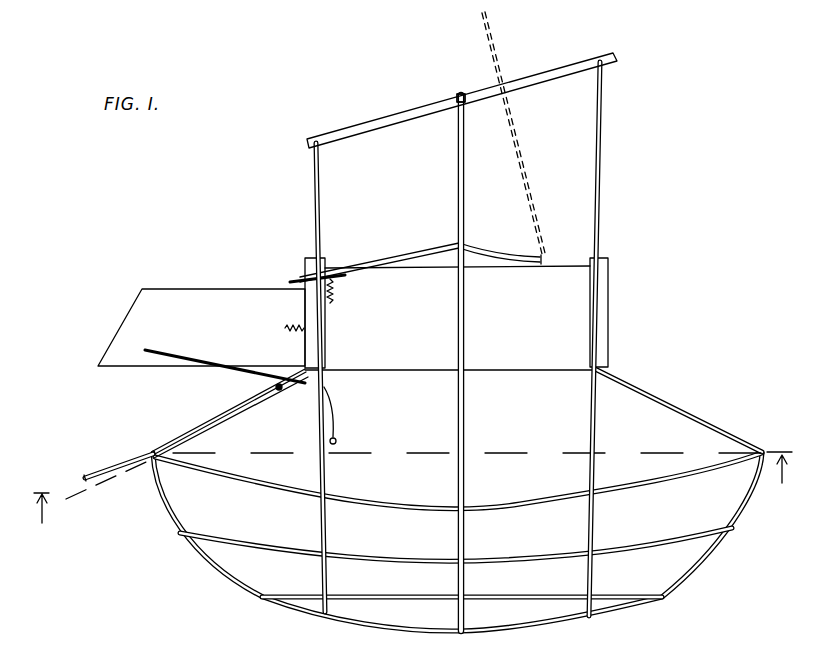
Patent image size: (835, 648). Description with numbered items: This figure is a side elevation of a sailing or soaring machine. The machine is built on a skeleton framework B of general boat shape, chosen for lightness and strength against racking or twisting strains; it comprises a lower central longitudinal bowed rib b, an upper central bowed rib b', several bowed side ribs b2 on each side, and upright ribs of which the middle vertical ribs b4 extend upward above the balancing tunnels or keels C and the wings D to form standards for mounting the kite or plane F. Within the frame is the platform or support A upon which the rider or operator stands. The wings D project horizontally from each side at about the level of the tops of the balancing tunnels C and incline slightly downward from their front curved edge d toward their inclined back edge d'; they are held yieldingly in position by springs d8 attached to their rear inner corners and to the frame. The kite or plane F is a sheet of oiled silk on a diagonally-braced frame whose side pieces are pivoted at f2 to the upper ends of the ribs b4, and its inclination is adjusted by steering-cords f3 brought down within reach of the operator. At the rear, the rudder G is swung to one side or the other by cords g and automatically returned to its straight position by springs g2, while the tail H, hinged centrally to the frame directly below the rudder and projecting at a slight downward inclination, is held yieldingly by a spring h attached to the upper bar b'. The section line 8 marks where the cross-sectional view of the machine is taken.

The lower central longitudinal bowed rib b is at (457, 542).
The platform or support A is at (517, 599).
The bowed side ribs b2 is at (408, 597).
The upper central bowed rib b' is at (457, 413).
The framework B is at (463, 422).
The section line 8 8 is at (411, 483).
The tail H is at (152, 442).
The cords g is at (243, 368).
The spring h is at (279, 392).
The rudder G is at (201, 327).
The balancing tunnels or keels C is at (456, 313).
The wings D is at (420, 262).
The inclined back edge d' is at (308, 269).
The springs d8 is at (334, 293).
The springs g2 is at (294, 325).
The front curved edge d is at (514, 135).
The steering-cords f3 is at (319, 218).
The middle vertical ribs b4 is at (465, 392).
The kite or plane F is at (538, 84).
The pivot f2 is at (462, 95).